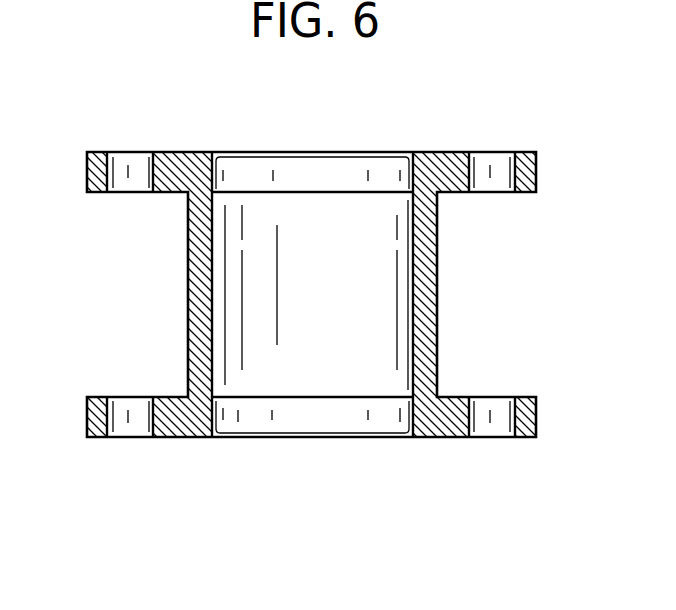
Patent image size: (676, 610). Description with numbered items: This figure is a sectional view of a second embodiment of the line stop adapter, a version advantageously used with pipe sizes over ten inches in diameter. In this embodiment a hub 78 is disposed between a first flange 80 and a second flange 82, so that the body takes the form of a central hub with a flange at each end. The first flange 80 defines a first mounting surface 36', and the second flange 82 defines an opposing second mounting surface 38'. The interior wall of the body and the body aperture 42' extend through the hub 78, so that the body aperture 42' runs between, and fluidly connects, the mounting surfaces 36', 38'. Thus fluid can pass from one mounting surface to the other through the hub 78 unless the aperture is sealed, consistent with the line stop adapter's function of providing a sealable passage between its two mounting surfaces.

The second flange 82 is at (87, 168).
The second mounting surface 38' is at (534, 148).
The hub 78 is at (437, 277).
The first flange 80 is at (87, 422).
The first mounting surface 36' is at (348, 445).
The body aperture 42' is at (316, 339).